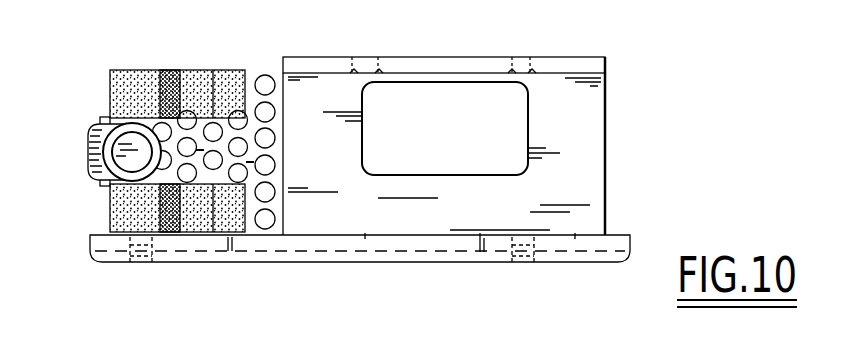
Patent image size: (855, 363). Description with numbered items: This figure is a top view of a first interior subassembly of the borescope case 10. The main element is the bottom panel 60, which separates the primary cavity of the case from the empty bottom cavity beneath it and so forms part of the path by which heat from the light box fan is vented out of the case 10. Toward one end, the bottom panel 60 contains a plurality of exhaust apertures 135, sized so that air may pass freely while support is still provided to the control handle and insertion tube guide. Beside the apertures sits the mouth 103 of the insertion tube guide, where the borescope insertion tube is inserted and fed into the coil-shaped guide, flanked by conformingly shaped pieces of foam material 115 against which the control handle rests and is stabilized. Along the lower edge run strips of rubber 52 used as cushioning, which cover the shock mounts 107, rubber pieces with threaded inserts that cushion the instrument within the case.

The case 10 is at (580, 52).
The strips of rubber 52 is at (92, 248).
The bottom panel 60 is at (578, 175).
The mouth 103 is at (90, 150).
The shock mounts 107 is at (140, 263).
The foam material 115 is at (135, 70).
The exhaust apertures 135 is at (263, 83).